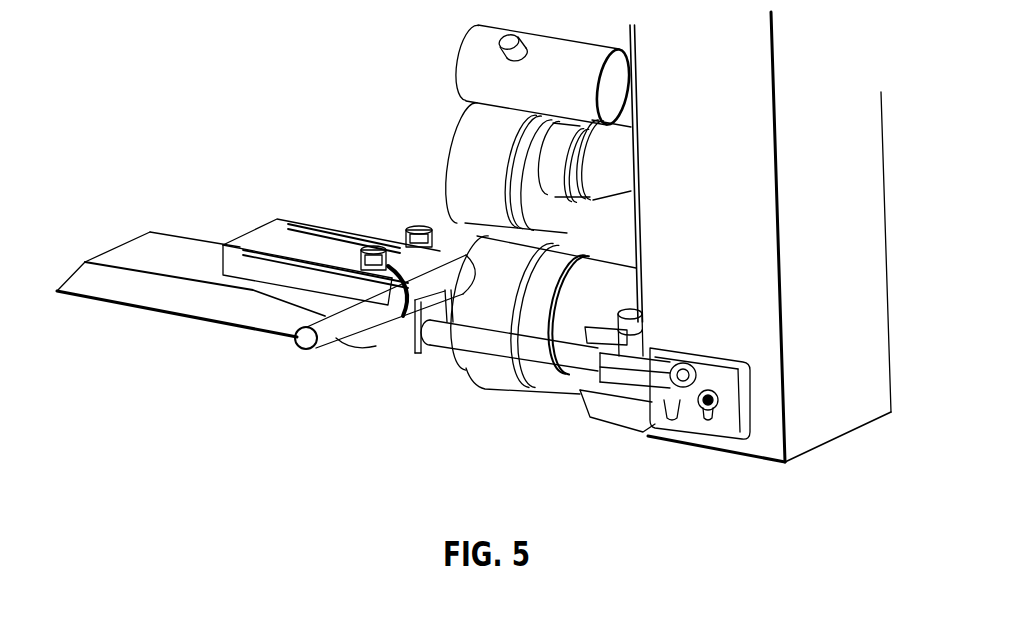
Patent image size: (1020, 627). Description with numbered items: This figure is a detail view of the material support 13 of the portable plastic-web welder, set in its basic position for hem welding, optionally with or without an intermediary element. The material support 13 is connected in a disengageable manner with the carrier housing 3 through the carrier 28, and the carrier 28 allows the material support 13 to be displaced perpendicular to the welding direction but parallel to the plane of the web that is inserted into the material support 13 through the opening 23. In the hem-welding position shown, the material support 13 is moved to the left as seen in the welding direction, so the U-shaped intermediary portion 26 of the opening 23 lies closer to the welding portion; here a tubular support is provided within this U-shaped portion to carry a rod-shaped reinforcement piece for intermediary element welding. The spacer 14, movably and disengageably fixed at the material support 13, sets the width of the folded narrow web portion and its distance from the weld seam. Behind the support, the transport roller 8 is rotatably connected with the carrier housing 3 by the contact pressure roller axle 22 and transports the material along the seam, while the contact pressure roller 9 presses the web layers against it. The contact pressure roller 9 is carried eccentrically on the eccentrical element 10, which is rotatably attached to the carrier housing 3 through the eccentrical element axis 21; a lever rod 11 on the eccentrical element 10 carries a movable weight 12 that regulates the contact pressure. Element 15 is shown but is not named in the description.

The carrier housing 3 is at (737, 57).
The transport roller 8 is at (480, 367).
The contact pressure roller 9 is at (487, 167).
The eccentrical element 10 is at (573, 187).
The lever rod 11 is at (493, 35).
The weight 12 is at (558, 62).
The material support 13 is at (346, 370).
The spacer 14 is at (407, 228).
The rod 15 is at (303, 357).
The eccentrical element axis 21 is at (603, 160).
The contact pressure roller axle 22 is at (580, 318).
The opening 23 is at (258, 287).
The U-shaped intermediary portion 26 is at (413, 356).
The carrier 28 is at (690, 417).